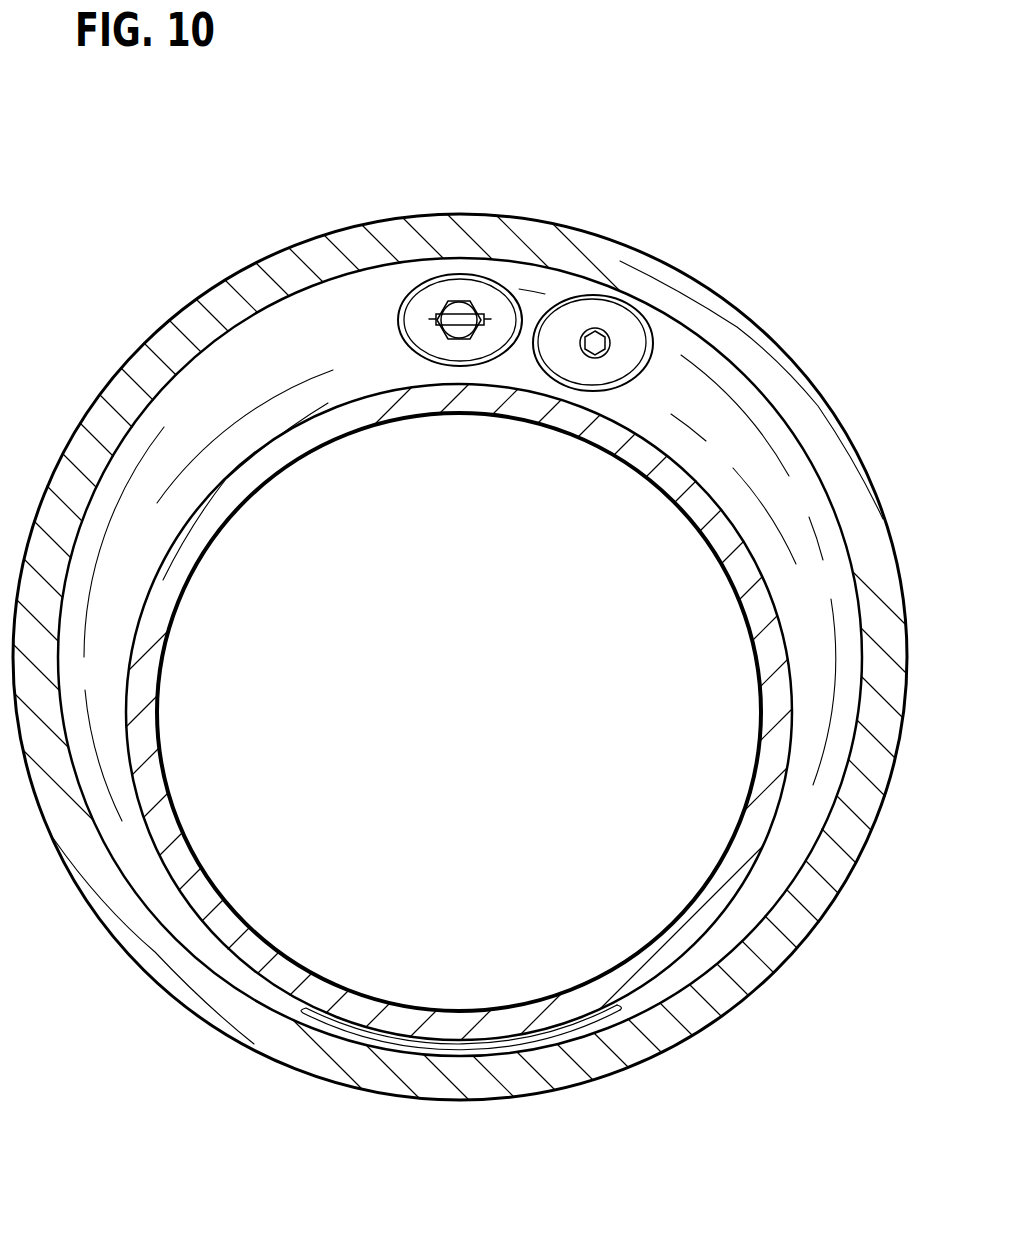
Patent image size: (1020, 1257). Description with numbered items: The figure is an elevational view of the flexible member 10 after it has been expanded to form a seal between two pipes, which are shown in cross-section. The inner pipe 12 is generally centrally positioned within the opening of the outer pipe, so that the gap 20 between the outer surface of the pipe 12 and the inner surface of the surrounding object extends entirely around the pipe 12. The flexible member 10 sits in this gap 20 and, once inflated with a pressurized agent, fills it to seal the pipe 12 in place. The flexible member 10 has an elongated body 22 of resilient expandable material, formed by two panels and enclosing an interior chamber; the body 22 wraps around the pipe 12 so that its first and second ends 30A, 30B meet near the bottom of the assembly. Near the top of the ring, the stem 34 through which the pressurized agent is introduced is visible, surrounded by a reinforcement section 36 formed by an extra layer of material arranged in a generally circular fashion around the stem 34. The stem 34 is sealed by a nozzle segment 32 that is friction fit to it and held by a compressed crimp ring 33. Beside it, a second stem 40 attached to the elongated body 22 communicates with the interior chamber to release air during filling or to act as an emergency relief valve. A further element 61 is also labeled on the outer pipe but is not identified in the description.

The flexible member 10 is at (762, 454).
The pipe 12 is at (227, 520).
The gap 20 is at (533, 262).
The elongated body 22 is at (740, 390).
The first end 30A is at (303, 1012).
The second end 30B is at (620, 1012).
The nozzle segment 32 is at (460, 308).
The crimp ring 33 is at (443, 338).
The stem 34 is at (433, 318).
The reinforcement section 36 is at (567, 367).
The second stem 40 is at (607, 333).
The outer peripheral surface of ring 61 is at (148, 333).